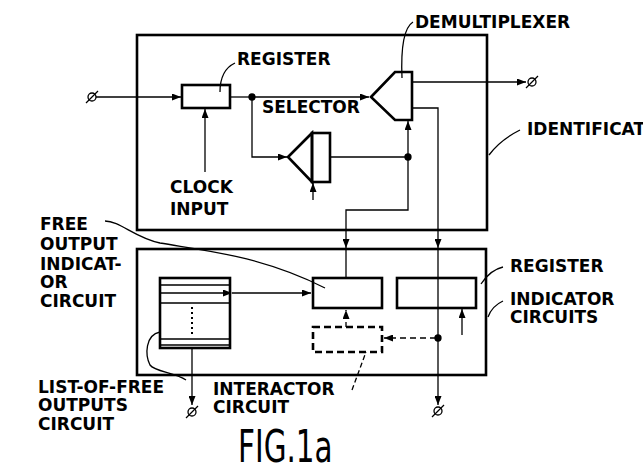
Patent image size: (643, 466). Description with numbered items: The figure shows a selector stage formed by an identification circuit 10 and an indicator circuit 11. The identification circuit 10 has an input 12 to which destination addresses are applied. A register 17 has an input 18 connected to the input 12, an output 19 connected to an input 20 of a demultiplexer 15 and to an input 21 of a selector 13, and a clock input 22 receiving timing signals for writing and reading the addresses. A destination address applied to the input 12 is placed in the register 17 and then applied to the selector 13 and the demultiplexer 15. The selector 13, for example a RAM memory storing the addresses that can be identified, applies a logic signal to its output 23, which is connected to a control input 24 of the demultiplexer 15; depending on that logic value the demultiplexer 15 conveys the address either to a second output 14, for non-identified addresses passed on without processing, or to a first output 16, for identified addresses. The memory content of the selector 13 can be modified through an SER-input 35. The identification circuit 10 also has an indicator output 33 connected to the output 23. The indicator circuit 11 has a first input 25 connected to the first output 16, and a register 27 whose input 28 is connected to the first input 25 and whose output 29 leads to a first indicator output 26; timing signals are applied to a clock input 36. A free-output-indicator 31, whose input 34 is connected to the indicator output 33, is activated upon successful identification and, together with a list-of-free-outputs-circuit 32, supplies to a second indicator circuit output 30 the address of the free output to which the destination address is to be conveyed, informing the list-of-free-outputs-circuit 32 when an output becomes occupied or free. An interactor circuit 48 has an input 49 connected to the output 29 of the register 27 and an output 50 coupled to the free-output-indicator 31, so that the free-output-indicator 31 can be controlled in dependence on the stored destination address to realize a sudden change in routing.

The identification circuit 10 is at (137, 198).
The indicator circuit 11 is at (137, 329).
The input 12 is at (93, 92).
The selector 13 is at (296, 172).
The second output 14 is at (529, 80).
The demultiplexer 15 is at (322, 150).
The first output 16 is at (440, 243).
The register 17 is at (205, 85).
The input 18 is at (177, 101).
The output 19 is at (240, 102).
The input 20 is at (371, 92).
The input 21 is at (287, 152).
The clock input 22 is at (203, 111).
The output 23 is at (333, 160).
The control input 24 is at (409, 118).
The first input 25 is at (446, 248).
The first indicator output 26 is at (446, 411).
The register 27 is at (424, 277).
The input 28 is at (465, 290).
The output 29 is at (437, 310).
The second indicator circuit output 30 is at (188, 410).
The free-output-indicator 31 is at (330, 277).
The list-of-free-outputs-circuit 32 is at (231, 322).
The indicator output 33 is at (345, 226).
The input 34 is at (350, 277).
The SER-input 35 is at (315, 190).
The clock input 36 is at (466, 318).
The interactor circuit 48 is at (326, 352).
The input 49 is at (385, 341).
The output 50 is at (342, 316).